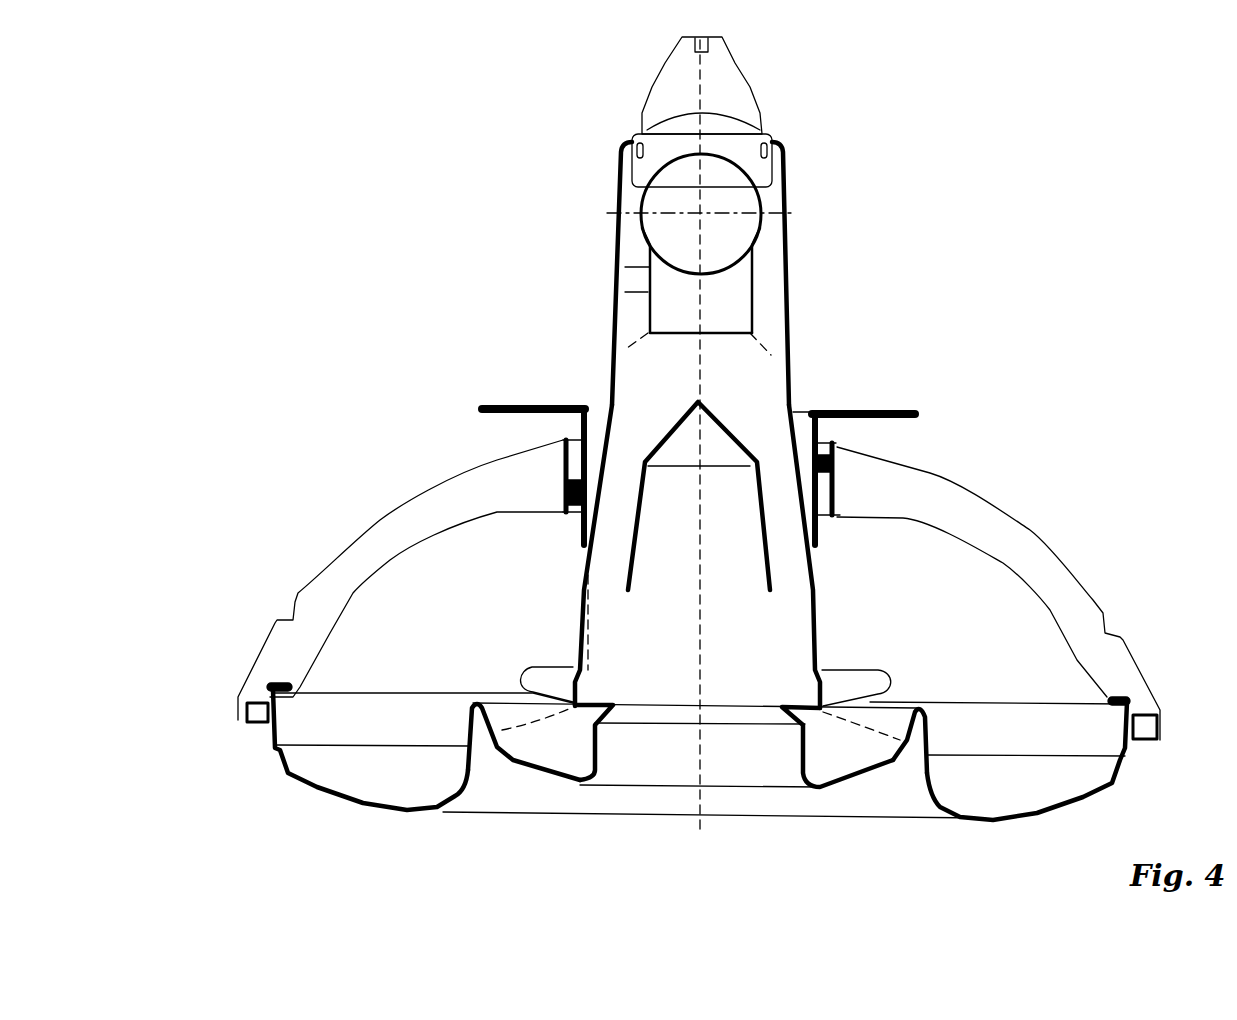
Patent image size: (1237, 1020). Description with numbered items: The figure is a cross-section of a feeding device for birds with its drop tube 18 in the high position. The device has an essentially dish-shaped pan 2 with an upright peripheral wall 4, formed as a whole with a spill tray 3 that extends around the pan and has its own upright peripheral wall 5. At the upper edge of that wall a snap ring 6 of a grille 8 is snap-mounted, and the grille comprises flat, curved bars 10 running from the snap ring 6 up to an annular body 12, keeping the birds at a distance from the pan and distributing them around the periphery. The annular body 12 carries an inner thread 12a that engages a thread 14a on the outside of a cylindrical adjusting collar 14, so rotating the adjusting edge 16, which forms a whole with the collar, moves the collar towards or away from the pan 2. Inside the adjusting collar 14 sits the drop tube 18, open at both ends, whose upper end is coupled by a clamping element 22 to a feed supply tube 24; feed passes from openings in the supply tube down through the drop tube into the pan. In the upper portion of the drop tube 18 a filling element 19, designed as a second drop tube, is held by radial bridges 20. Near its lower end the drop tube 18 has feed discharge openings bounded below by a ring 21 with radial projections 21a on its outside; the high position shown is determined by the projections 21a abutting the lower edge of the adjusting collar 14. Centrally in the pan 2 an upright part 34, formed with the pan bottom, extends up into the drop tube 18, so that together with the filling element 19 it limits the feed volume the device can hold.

The dish-shaped pan 2 is at (552, 778).
The spill tray 3 is at (325, 790).
The upright peripheral wall 4 is at (470, 718).
The upright peripheral wall 5 is at (270, 742).
The snap ring 6 is at (268, 708).
The grille 8 is at (287, 490).
The bars 10 is at (1002, 533).
The annular body 12 is at (840, 492).
The thread 12a is at (835, 467).
The adjusting collar 14 is at (578, 582).
The thread 14a is at (566, 512).
The adjusting edge 16 is at (560, 406).
The drop tube 18 is at (787, 378).
The filling element 19 is at (757, 308).
The bridges 20 is at (640, 282).
The ring 21 is at (830, 687).
The radial projections 21a is at (870, 690).
The clamping element 22 is at (730, 100).
The feed supply tube 24 is at (622, 217).
The upright part 34 is at (782, 625).